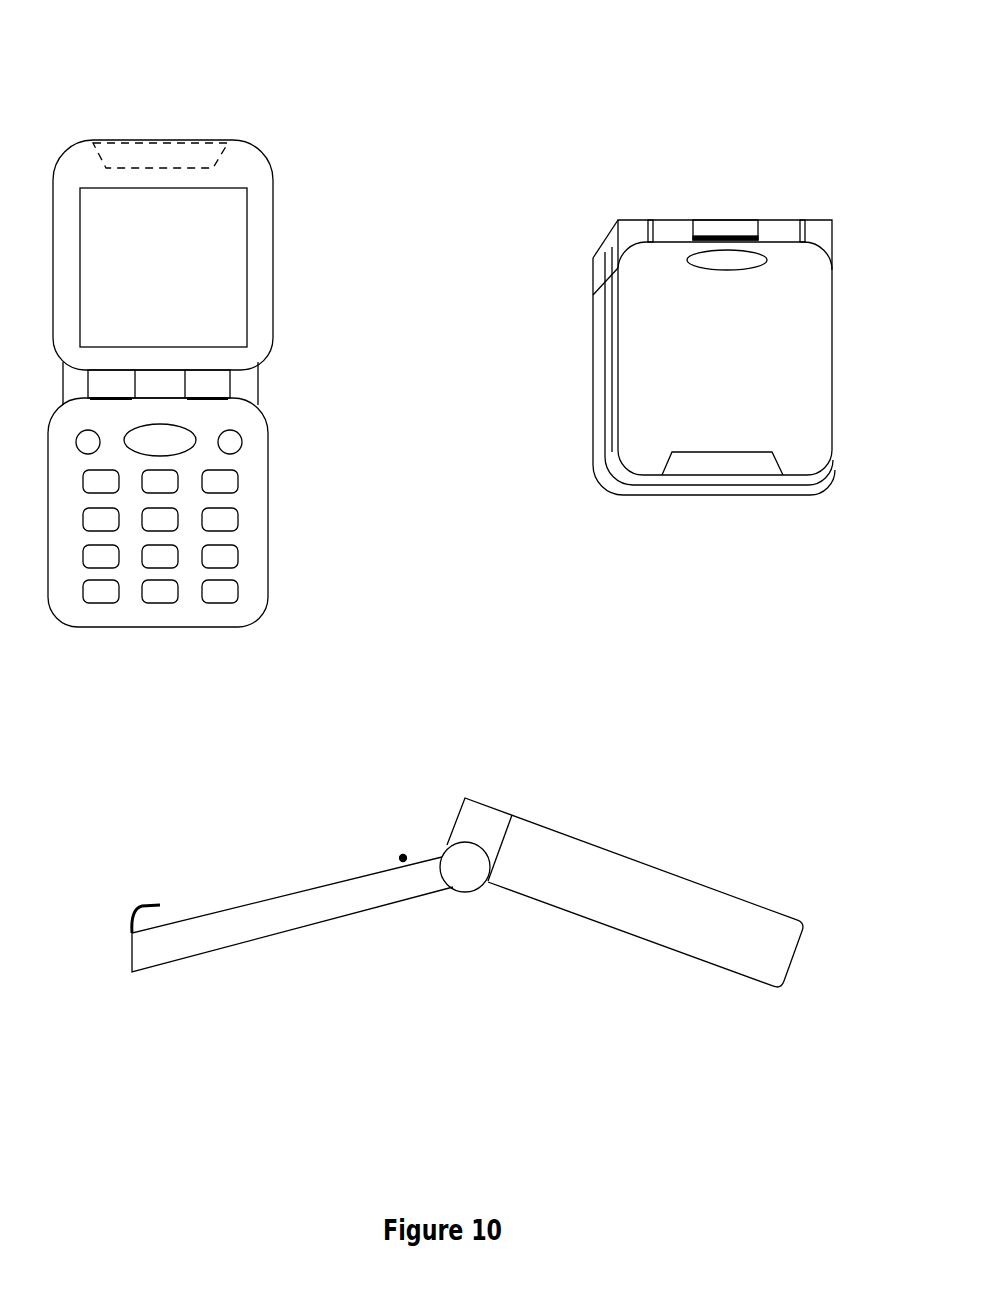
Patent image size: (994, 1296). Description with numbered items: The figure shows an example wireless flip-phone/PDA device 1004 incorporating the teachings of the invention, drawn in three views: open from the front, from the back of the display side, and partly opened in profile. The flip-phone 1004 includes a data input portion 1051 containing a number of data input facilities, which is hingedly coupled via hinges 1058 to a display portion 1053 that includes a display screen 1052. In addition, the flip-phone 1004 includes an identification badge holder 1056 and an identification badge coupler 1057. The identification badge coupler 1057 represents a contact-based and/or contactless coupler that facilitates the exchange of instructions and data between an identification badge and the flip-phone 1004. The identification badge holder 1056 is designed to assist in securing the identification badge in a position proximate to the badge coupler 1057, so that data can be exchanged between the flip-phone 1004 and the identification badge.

The flip-phone/PDA device 1004 is at (502, 28).
The data input portion 1051 is at (268, 530).
The display screen 1052 is at (222, 307).
The display portion 1053 is at (257, 228).
The identification badge holder 1056 is at (895, 245).
The identification badge coupler 1057 is at (153, 157).
The hinges 1058 is at (270, 360).